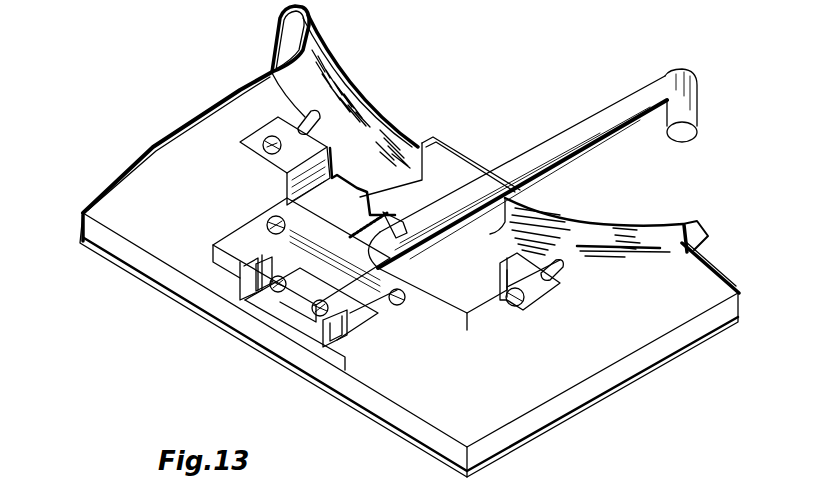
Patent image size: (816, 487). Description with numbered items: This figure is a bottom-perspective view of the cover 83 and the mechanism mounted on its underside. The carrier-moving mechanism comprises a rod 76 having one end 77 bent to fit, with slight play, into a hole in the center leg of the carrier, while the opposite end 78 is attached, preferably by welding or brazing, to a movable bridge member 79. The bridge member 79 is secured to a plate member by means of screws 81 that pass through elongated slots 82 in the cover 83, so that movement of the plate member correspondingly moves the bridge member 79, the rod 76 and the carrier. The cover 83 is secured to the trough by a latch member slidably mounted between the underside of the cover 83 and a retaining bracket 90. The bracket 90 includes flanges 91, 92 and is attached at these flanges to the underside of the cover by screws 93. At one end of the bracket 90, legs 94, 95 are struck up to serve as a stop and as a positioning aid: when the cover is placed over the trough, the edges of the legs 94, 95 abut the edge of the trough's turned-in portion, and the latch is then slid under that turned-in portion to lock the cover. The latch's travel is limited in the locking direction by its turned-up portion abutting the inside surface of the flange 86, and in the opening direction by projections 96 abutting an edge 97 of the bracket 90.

The rod 76 is at (543, 141).
The bent end of rod 77 is at (698, 110).
The opposite end of rod 78 is at (376, 270).
The bridge member 79 is at (490, 275).
The screws 81 is at (268, 135).
The elongated slots 82 is at (302, 110).
The cover 83 is at (110, 182).
The flange 86 is at (313, 23).
The retaining bracket 90 is at (247, 281).
The flange of bracket 91 is at (250, 233).
The flange of bracket 92 is at (383, 317).
The screws 93 is at (273, 212).
The leg 94 is at (250, 283).
The leg 95 is at (325, 340).
The projections 96 is at (273, 300).
The edge of bracket 97 is at (297, 295).